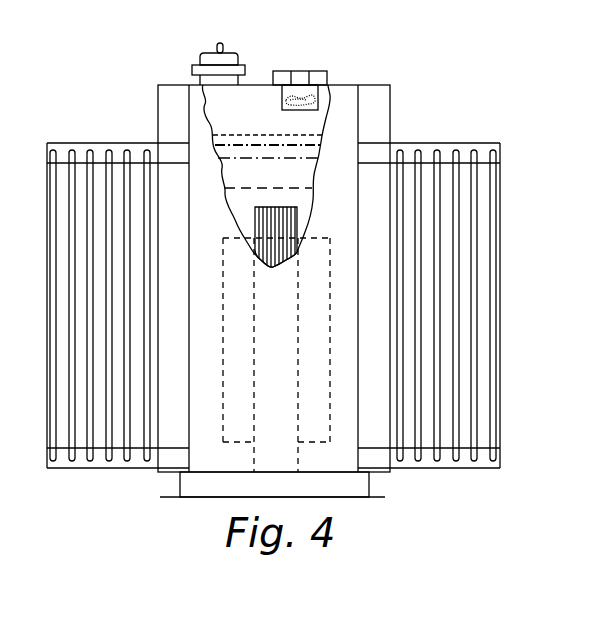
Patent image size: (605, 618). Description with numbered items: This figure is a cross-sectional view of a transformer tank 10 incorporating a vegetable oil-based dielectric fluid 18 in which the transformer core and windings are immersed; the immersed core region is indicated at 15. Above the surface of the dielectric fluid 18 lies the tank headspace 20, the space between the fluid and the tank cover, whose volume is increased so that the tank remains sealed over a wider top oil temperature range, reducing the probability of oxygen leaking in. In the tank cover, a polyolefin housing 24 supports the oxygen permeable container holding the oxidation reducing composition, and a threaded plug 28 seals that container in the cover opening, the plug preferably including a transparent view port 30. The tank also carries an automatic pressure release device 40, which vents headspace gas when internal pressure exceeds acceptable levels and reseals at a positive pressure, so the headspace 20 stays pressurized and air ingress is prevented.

The transformer tank 10 is at (523, 173).
The core 15 is at (277, 218).
The dielectric fluid 18 is at (253, 133).
The tank headspace 20 is at (238, 109).
The polyolefin housing 24 is at (318, 92).
The threaded plug 28 is at (322, 72).
The transparent view port 30 is at (298, 71).
The automatic pressure release device 40 is at (204, 54).